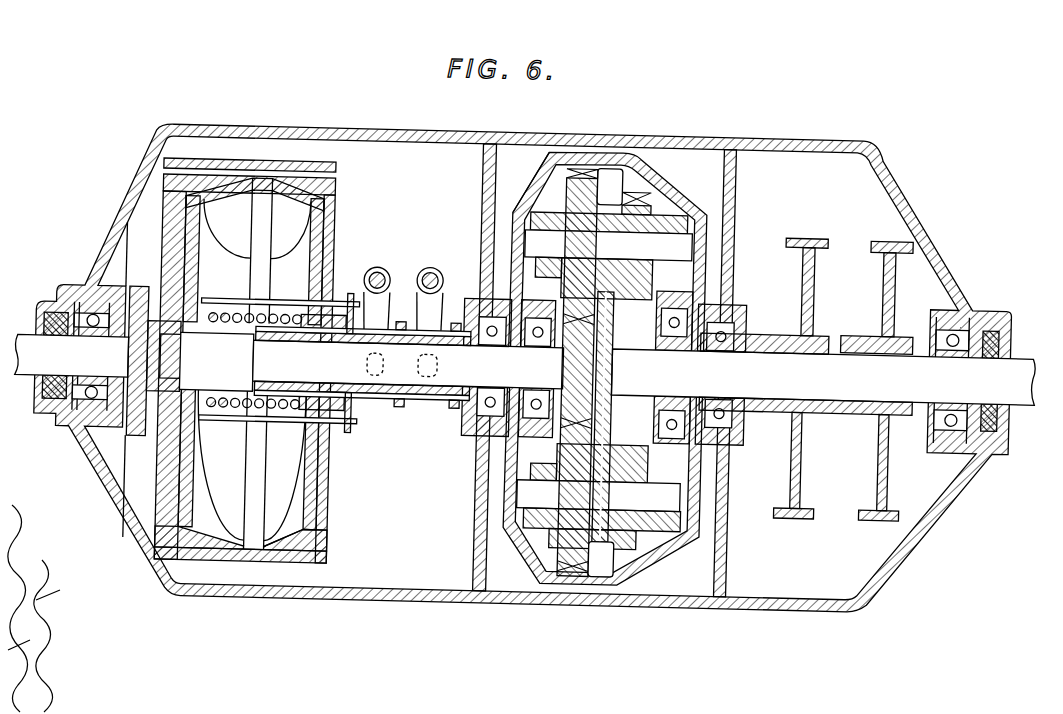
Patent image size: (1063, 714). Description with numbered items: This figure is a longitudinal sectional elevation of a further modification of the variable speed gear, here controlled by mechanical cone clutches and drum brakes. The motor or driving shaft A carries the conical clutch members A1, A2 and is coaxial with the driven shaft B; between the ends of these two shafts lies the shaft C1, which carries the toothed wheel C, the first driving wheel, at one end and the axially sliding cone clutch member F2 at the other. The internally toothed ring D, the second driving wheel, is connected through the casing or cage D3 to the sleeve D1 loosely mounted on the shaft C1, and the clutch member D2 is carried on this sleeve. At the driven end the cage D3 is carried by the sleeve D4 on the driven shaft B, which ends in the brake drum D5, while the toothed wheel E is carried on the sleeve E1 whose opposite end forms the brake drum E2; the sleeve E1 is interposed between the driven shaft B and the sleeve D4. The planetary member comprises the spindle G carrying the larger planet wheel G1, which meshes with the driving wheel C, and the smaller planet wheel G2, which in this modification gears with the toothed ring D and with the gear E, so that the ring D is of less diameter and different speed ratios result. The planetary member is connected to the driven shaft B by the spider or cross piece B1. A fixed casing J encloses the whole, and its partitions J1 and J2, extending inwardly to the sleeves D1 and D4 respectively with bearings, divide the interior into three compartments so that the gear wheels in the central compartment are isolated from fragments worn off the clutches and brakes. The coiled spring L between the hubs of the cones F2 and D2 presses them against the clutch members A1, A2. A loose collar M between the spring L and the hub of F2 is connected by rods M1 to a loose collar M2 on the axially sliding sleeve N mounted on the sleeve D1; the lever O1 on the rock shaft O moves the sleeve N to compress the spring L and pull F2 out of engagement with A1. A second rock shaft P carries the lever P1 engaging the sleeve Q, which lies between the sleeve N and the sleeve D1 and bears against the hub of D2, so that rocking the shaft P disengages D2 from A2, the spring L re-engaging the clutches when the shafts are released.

The driving shaft A is at (72, 355).
The driving clutch member A1 is at (161, 549).
The driving clutch member A2 is at (325, 566).
The driven shaft B is at (823, 377).
The spider or cross piece B1 is at (613, 405).
The toothed wheel C is at (569, 399).
The shaft C1 is at (408, 364).
The internally toothed ring D is at (626, 194).
The sleeve D1 is at (403, 410).
The clutch member D2 is at (332, 542).
The casing or cage D3 is at (531, 188).
The sleeve D4 is at (744, 325).
The brake member D5 is at (804, 233).
The toothed wheel E is at (671, 399).
The sleeve E1 is at (741, 412).
The brake member E2 is at (876, 504).
The cone clutch member F2 is at (224, 545).
The spindle G is at (599, 497).
The planet wheel G1 is at (580, 174).
The planet wheel G2 is at (628, 197).
The fixed casing J is at (609, 598).
The partition J1 is at (480, 563).
The partition J2 is at (718, 572).
The coiled spring L is at (286, 413).
The loose collar M is at (191, 418).
The rods M1 is at (228, 430).
The loose collar M2 is at (351, 306).
The axially sliding sleeve N is at (371, 412).
The rock shaft O is at (375, 271).
The lever O1 is at (387, 320).
The rock shaft P is at (431, 270).
The lever P1 is at (438, 309).
The sleeve Q is at (424, 411).